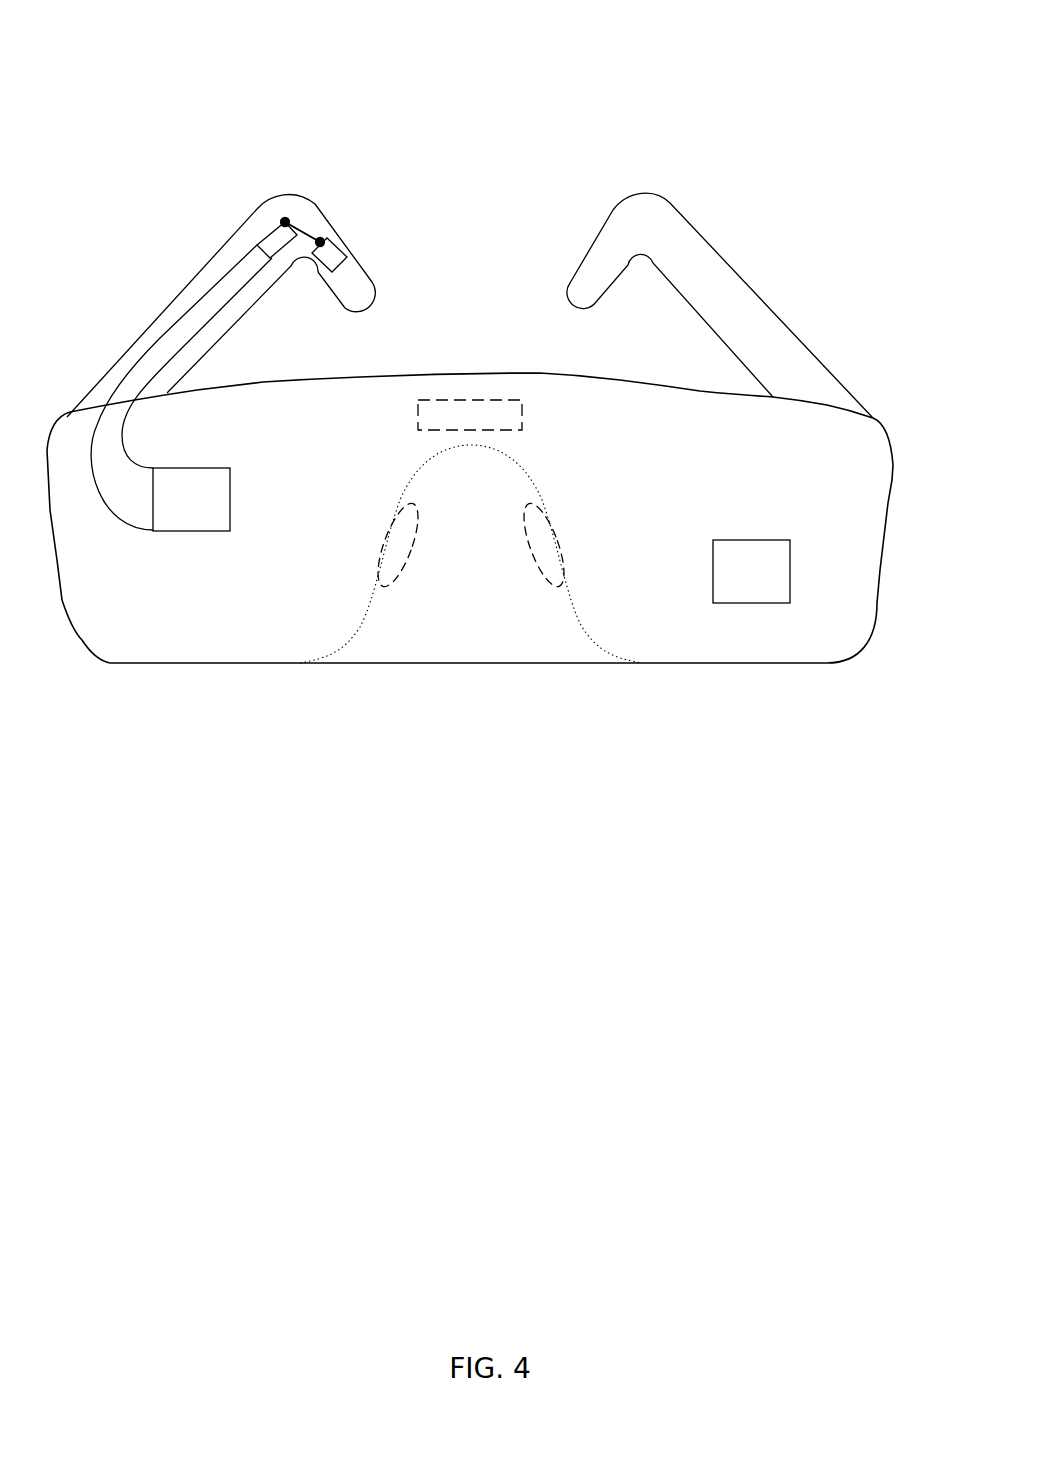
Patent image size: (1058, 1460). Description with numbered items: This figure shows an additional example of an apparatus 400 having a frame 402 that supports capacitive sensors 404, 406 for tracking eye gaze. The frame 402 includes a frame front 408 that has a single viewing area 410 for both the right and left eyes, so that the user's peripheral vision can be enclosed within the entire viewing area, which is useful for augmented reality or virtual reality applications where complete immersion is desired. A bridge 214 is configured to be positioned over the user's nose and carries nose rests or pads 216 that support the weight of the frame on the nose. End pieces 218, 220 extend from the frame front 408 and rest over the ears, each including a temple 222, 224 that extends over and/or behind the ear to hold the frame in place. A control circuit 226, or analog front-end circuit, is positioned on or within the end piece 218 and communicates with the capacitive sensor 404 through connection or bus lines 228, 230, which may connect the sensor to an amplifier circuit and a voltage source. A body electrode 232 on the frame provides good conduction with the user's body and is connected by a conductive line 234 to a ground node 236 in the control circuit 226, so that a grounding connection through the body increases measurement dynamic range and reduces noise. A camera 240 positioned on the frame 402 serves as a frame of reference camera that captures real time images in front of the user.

The apparatus 400 is at (611, 44).
The frame 402 is at (889, 438).
The capacitive sensor 404 is at (191, 499).
The capacitive sensor 406 is at (751, 571).
The frame front 408 is at (92, 628).
The single viewing area 410 is at (265, 610).
The bridge 214 is at (428, 448).
The nose rests or pads 216 is at (403, 563).
The end piece 218 is at (203, 276).
The end piece 220 is at (820, 355).
The temple 222 is at (357, 293).
The temple 224 is at (585, 290).
The control circuit 226 is at (268, 238).
The connection or bus line 228 is at (158, 338).
The connection or bus line 230 is at (233, 300).
The body electrode 232 is at (337, 250).
The conductive line 234 is at (303, 228).
The ground node 236 is at (286, 218).
The camera 240 is at (463, 400).